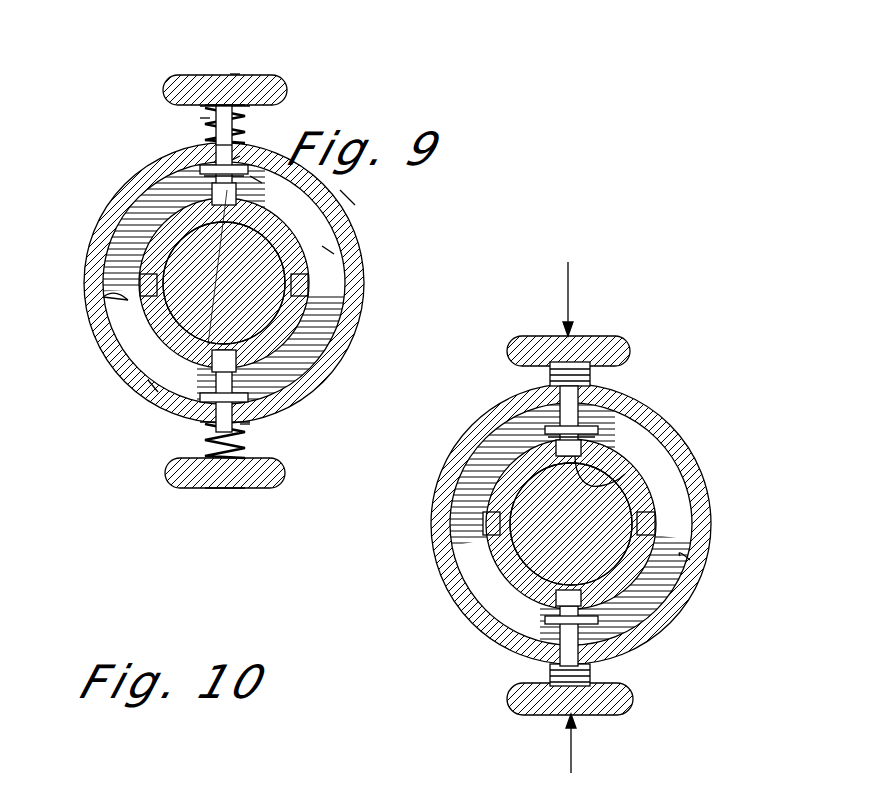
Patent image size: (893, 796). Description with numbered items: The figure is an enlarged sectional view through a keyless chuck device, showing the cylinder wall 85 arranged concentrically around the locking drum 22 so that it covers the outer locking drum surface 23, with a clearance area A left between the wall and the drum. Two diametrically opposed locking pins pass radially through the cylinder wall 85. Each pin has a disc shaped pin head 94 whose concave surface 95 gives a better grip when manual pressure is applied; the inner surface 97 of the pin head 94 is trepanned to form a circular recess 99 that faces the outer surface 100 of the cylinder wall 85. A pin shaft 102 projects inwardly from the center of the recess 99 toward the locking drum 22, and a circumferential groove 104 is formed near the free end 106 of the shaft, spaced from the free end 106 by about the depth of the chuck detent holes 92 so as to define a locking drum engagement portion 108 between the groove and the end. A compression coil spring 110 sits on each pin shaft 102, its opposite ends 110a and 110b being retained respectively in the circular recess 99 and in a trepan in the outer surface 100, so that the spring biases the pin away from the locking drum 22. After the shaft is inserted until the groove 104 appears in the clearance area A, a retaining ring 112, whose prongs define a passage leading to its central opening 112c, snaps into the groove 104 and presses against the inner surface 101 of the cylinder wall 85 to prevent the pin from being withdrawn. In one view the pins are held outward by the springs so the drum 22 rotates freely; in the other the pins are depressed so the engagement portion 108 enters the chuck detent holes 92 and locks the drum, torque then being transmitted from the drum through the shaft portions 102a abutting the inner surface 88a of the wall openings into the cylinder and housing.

In FIG. 9, the cylinder wall 85 is at (360, 307).
In FIG. 10, the cylinder wall 85 is at (447, 577).
In FIG. 9, the chuck detent holes 92 is at (112, 247).
In FIG. 10, the chuck detent holes 92 is at (607, 480).
In FIG. 9, the locking drum 22 is at (303, 253).
In FIG. 10, the locking drum 22 is at (571, 524).
In FIG. 9, the outer locking drum surface 23 is at (150, 334).
In FIG. 10, the outer locking drum surface 23 is at (613, 607).
In FIG. 9, the concave surface 95 is at (268, 78).
In FIG. 10, the concave surface 95 is at (576, 340).
In FIG. 9, the pin head 94 is at (282, 73).
In FIG. 9, the inner surface 97 is at (205, 117).
In FIG. 9, the circular recess 99 is at (243, 117).
In FIG. 9, the compression coil spring 110 is at (208, 436).
In FIG. 10, the compression coil spring 110 is at (588, 366).
In FIG. 9, the spring end 110a is at (210, 102).
In FIG. 9, the spring end 110b is at (247, 427).
In FIG. 9, the pin shaft 102 is at (210, 152).
In FIG. 10, the pin shaft 102 is at (567, 407).
In FIG. 9, the shaft portion 102a is at (205, 150).
In FIG. 9, the locking drum engagement portion 108 is at (240, 173).
In FIG. 10, the locking drum engagement portion 108 is at (580, 438).
In FIG. 9, the retaining ring 112 is at (212, 168).
In FIG. 10, the retaining ring 112 is at (587, 430).
In FIG. 9, the central opening 112c is at (251, 37).
In FIG. 9, the inner surface of opening 88a is at (235, 160).
In FIG. 9, the outer surface of cylinder wall 100 is at (347, 200).
In FIG. 9, the circumferential groove 104 is at (258, 180).
In FIG. 9, the clearance area A is at (328, 250).
In FIG. 9, the inner surface of cylinder wall 101 is at (125, 300).
In FIG. 10, the inner surface of cylinder wall 101 is at (690, 560).
In FIG. 9, the free end 106 is at (152, 385).